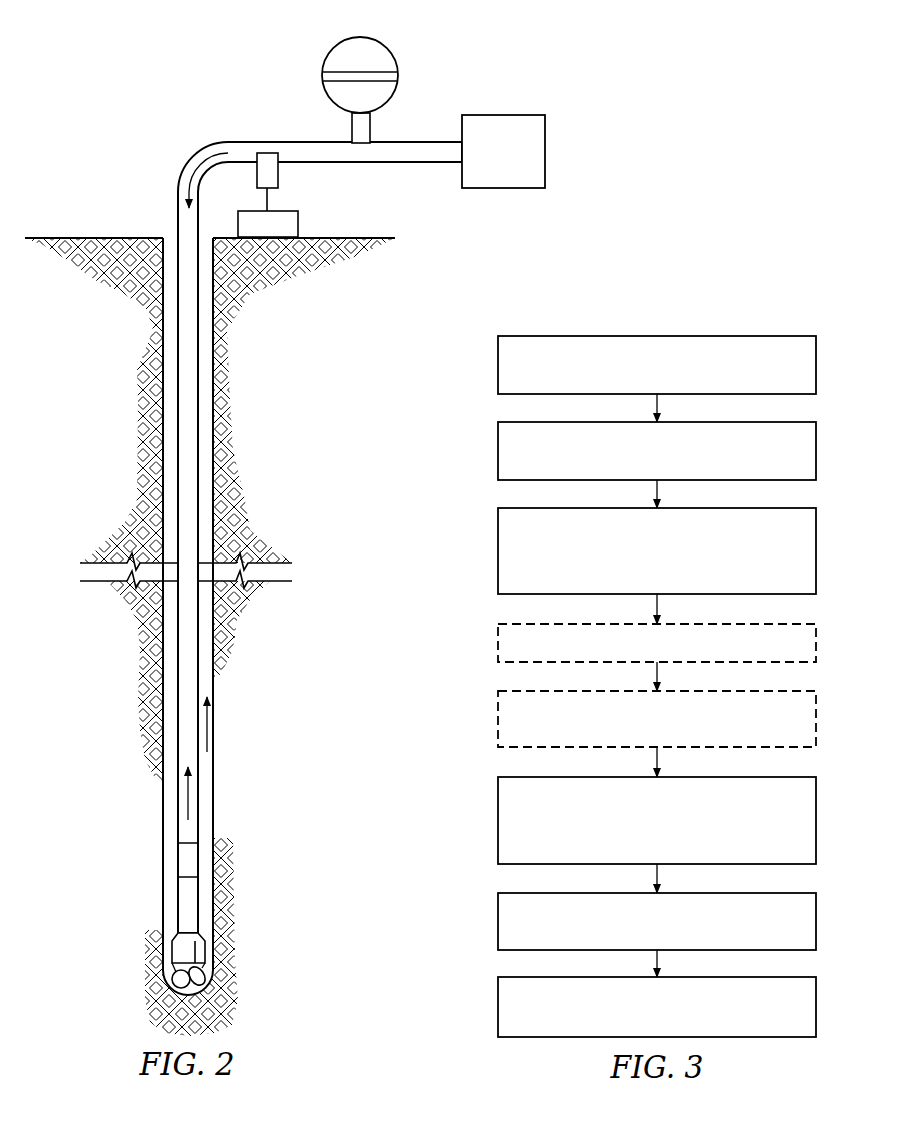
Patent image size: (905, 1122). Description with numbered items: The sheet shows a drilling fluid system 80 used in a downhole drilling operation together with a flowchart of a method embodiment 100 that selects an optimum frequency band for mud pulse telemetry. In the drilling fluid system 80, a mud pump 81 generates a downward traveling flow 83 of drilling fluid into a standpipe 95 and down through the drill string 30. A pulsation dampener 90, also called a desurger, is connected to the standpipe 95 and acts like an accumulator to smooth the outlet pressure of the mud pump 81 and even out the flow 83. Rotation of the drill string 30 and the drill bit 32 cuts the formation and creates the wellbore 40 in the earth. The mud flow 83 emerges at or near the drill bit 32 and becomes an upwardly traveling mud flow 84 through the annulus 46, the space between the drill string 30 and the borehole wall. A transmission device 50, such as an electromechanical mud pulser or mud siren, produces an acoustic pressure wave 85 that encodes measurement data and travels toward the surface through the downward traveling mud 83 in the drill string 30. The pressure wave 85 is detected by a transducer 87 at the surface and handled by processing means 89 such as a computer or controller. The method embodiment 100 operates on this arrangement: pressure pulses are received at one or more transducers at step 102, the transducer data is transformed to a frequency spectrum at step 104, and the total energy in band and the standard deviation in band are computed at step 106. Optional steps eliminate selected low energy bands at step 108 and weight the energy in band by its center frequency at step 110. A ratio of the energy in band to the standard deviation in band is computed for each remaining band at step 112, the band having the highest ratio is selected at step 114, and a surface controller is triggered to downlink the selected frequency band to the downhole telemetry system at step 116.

In FIG. 2, the drilling fluid system 80 is at (144, 80).
In FIG. 2, the pulsation dampener 90 is at (318, 70).
In FIG. 2, the downward traveling flow of drilling fluid 83 is at (206, 163).
In FIG. 2, the mud pump 81 is at (490, 162).
In FIG. 2, the transducer 87 is at (279, 170).
In FIG. 2, the processing means 89 is at (299, 223).
In FIG. 2, the standpipe 95 is at (405, 163).
In FIG. 2, the drill string 30 is at (178, 213).
In FIG. 2, the annulus 46 is at (162, 330).
In FIG. 2, the wellbore 40 is at (163, 832).
In FIG. 2, the upwardly traveling mud flow 84 is at (214, 728).
In FIG. 2, the acoustic pressure wave 85 is at (197, 797).
In FIG. 2, the transmission device 50 is at (186, 860).
In FIG. 2, the drill bit 32 is at (206, 981).
In FIG. 3, the method embodiment 100 is at (738, 292).
In FIG. 3, the receiving pressure pulses at transducers 102 is at (497, 365).
In FIG. 3, the computing a spectrum 104 is at (497, 451).
In FIG. 3, the computing energy in band and standard deviation in band 106 is at (497, 554).
In FIG. 3, the eliminating selected low energy bands 108 is at (497, 645).
In FIG. 3, the weighting the energy in band 110 is at (497, 716).
In FIG. 3, the computing a ratio of energy in band to standard deviation in band 112 is at (497, 818).
In FIG. 3, the selecting the band having the highest ratio 114 is at (497, 919).
In FIG. 3, the downlinking the selected frequency band 116 is at (497, 1009).